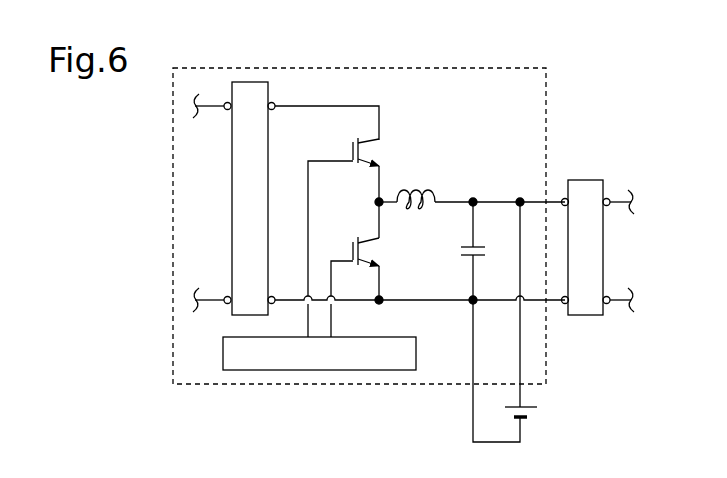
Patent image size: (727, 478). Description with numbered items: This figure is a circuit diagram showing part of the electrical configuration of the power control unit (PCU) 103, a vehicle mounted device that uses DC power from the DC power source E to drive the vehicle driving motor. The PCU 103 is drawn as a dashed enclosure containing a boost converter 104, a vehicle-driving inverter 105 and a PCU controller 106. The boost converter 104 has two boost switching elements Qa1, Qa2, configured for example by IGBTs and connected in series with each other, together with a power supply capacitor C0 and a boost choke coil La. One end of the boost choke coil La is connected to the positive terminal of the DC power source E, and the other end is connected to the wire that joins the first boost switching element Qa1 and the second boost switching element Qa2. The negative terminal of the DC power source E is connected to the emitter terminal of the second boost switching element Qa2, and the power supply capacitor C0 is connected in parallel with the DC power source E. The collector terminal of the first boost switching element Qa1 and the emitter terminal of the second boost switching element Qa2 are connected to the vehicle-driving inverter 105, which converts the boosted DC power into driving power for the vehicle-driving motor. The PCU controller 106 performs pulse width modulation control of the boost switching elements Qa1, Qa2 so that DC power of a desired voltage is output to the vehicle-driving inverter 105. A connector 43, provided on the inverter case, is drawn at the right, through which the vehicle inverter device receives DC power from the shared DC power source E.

The power control unit (PCU) 103 is at (516, 66).
The boost converter 104 is at (461, 138).
The vehicle-driving inverter 105 is at (251, 82).
The PCU controller 106 is at (399, 337).
The connector 43 is at (583, 180).
The first boost switching element Qa1 is at (351, 148).
The second boost switching element Qa2 is at (351, 243).
The boost choke coil La is at (420, 190).
The power supply capacitor C0 is at (471, 258).
The DC power source E is at (530, 406).